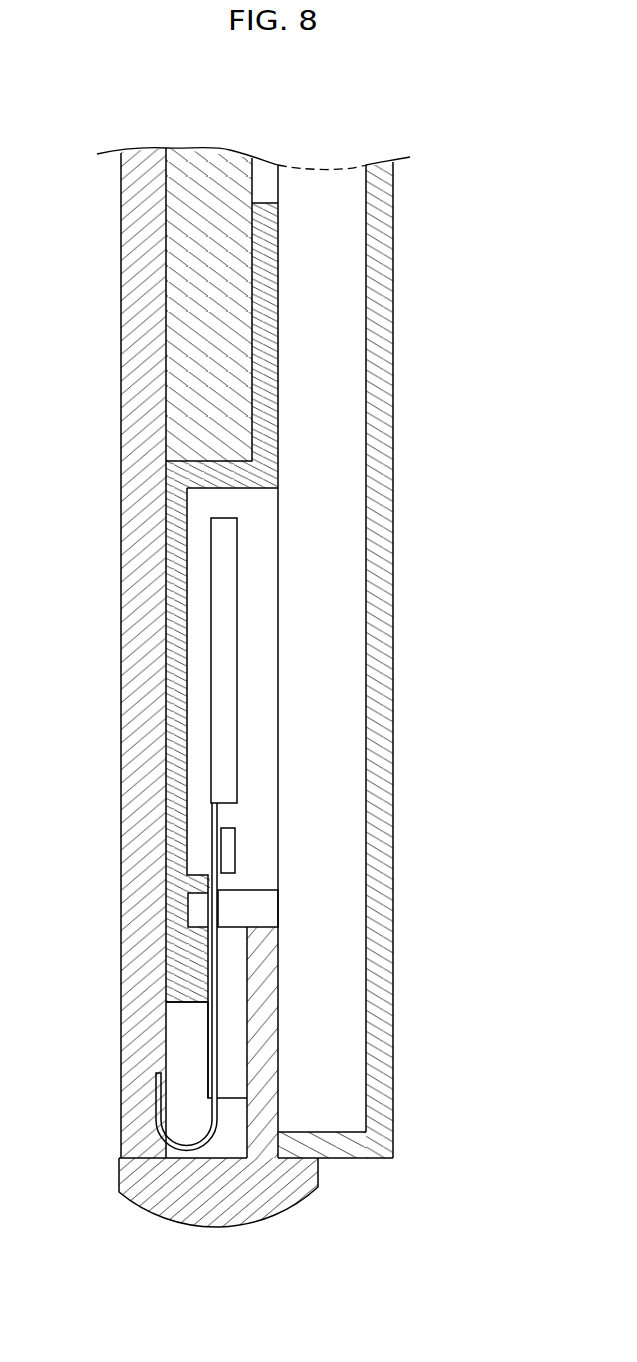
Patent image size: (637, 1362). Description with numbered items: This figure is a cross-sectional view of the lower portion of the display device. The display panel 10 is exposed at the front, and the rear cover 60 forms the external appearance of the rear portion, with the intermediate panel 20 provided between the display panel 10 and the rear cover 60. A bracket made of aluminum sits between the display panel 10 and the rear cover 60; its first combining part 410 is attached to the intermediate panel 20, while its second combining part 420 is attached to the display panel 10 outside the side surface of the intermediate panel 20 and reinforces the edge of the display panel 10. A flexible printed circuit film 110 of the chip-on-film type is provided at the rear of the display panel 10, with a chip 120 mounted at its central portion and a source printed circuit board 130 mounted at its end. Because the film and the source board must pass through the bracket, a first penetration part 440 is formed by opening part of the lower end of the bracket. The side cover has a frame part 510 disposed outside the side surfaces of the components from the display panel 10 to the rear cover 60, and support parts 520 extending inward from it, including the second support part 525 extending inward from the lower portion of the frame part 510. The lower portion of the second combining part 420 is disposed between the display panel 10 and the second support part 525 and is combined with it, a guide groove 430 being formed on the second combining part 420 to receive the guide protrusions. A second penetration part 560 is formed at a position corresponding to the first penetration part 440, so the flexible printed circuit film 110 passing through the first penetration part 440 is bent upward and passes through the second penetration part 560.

The display panel 10 is at (140, 347).
The intermediate panel 20 is at (197, 282).
The rear cover 60 is at (379, 300).
The flexible printed circuit film 110 is at (215, 1012).
The chip 120 is at (227, 848).
The source printed circuit board 130 is at (222, 633).
The first combining part 410 is at (265, 367).
The second combining part 420 is at (177, 615).
The guide groove 430 is at (192, 906).
The first penetration part 440 is at (191, 1056).
The frame part 510 is at (222, 1210).
The support part 520 is at (368, 1042).
The second support part 525 is at (262, 1077).
The second penetration part 560 is at (238, 905).